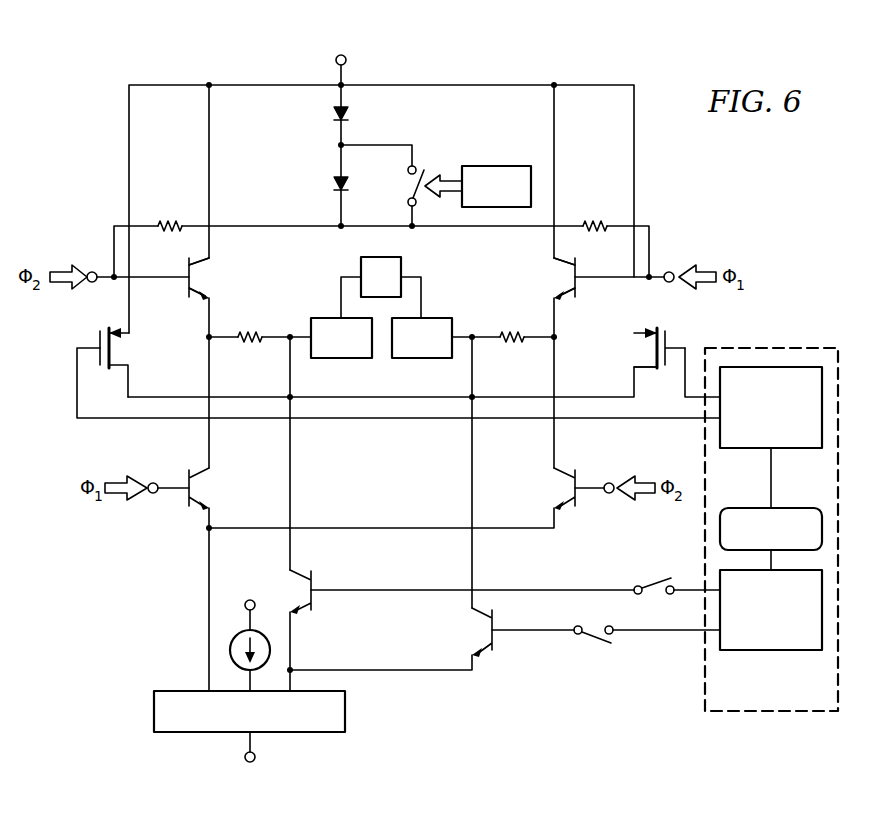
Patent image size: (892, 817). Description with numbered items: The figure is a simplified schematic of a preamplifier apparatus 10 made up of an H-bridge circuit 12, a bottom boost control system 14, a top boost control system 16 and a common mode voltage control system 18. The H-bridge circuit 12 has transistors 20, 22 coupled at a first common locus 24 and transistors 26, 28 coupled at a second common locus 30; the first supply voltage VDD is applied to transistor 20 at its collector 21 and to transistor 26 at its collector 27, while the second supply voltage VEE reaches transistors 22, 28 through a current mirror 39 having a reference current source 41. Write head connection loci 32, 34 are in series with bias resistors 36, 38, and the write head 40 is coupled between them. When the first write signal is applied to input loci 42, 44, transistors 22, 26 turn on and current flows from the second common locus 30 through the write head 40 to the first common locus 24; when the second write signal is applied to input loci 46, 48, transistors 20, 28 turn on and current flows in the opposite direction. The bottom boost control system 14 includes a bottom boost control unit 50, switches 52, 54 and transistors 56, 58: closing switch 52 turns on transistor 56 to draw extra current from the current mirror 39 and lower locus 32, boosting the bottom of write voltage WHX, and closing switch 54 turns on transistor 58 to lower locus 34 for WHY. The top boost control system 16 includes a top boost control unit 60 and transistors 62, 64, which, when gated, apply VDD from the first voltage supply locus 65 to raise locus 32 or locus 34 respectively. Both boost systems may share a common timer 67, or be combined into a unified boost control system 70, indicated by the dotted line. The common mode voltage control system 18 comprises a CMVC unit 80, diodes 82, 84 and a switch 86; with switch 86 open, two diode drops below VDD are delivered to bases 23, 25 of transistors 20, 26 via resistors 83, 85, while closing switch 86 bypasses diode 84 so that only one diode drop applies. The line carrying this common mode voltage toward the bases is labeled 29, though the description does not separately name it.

The preamplifier apparatus 10 is at (86, 62).
The H-bridge circuit 12 is at (262, 207).
The bottom boost control system 14 is at (432, 694).
The top boost control system 16 is at (791, 320).
The common mode voltage control system 18 is at (653, 164).
The transistor 20 is at (186, 272).
The collector 21 is at (209, 261).
The transistor 22 is at (186, 502).
The base 23 is at (178, 288).
The first common locus 24 is at (214, 339).
The base 25 is at (588, 288).
The transistor 26 is at (582, 273).
The collector 27 is at (560, 268).
The transistor 28 is at (578, 502).
The node 29 is at (436, 228).
The second common locus 30 is at (546, 339).
The write head connection locus 32 is at (336, 360).
The write head connection locus 34 is at (431, 360).
The bias resistor 36 is at (246, 334).
The bias resistor 38 is at (514, 334).
The current mirror 39 is at (154, 712).
The write head 40 is at (361, 270).
The reference current source 41 is at (230, 650).
The input locus 42 is at (153, 482).
The input locus 44 is at (672, 270).
The input locus 46 is at (92, 270).
The input locus 48 is at (610, 482).
The bottom boost control unit 50 is at (781, 650).
The switch 52 is at (660, 583).
The switch 54 is at (594, 638).
The transistor 56 is at (317, 602).
The transistor 58 is at (498, 641).
The top boost control unit 60 is at (754, 450).
The transistor 62 is at (98, 337).
The transistor 64 is at (669, 339).
The first voltage supply locus 65 is at (336, 60).
The timer 67 is at (790, 508).
The unified boost control system 70 is at (773, 718).
The common mode voltage control (CMVC) unit 80 is at (497, 166).
The diode 82 is at (334, 115).
The resistor 83 is at (170, 221).
The diode 84 is at (334, 185).
The resistor 85 is at (596, 221).
The switch 86 is at (408, 188).